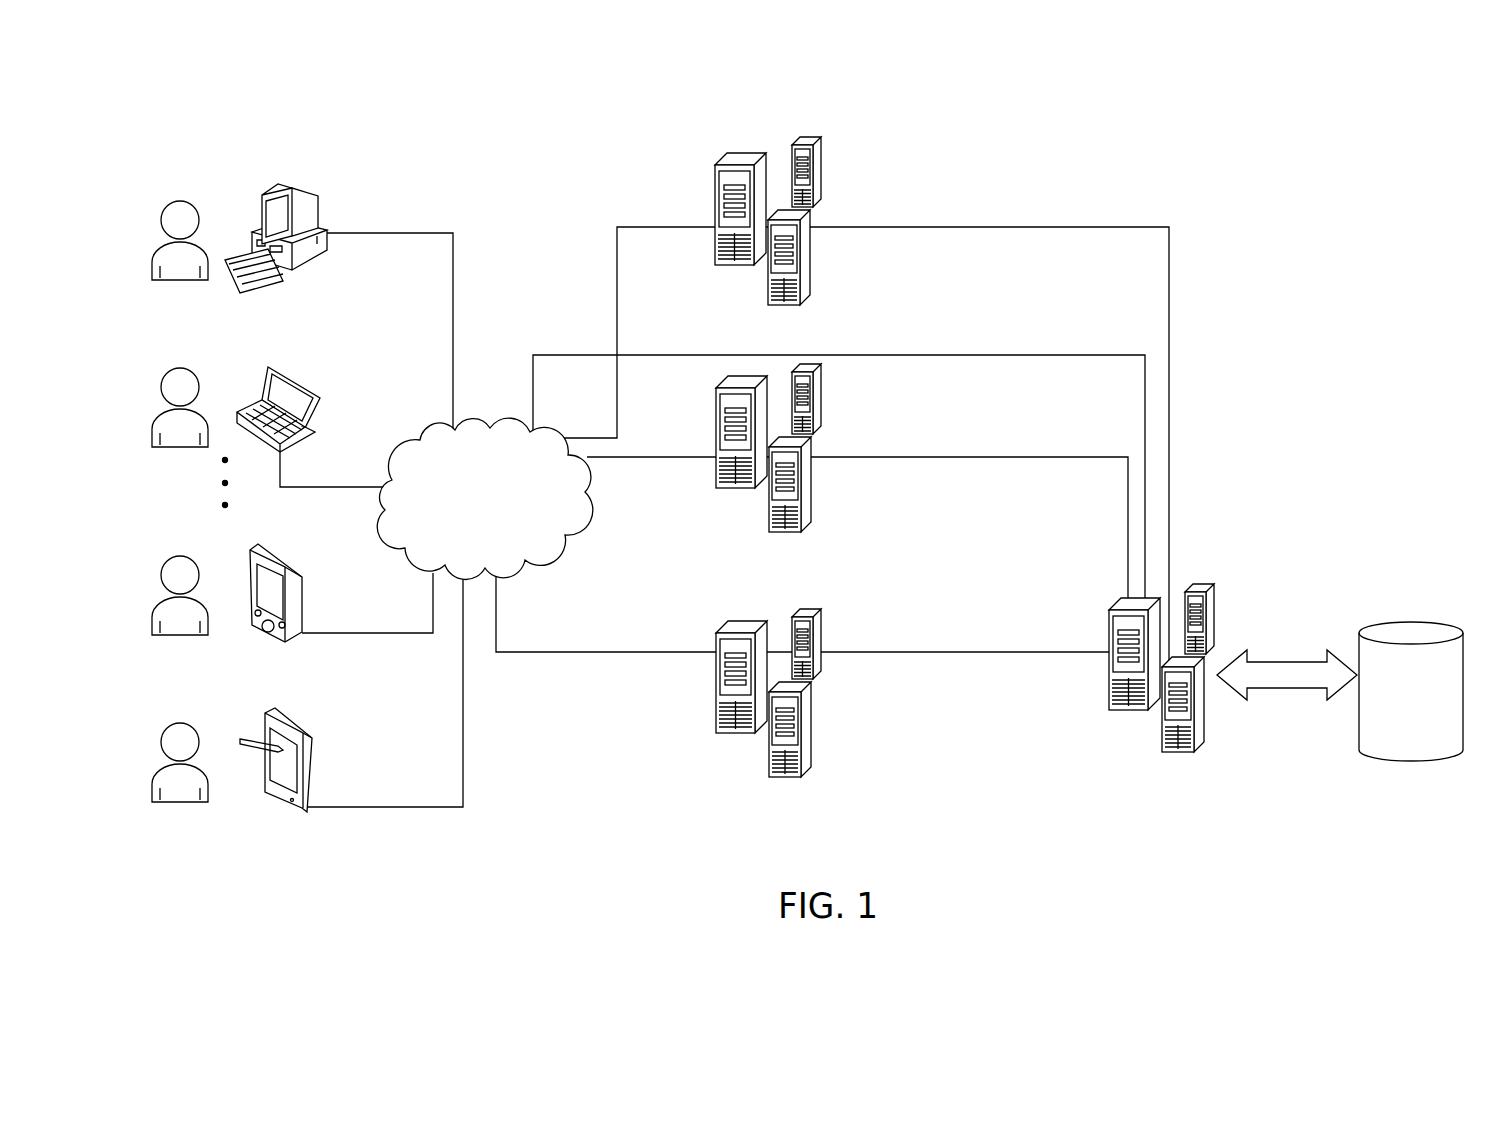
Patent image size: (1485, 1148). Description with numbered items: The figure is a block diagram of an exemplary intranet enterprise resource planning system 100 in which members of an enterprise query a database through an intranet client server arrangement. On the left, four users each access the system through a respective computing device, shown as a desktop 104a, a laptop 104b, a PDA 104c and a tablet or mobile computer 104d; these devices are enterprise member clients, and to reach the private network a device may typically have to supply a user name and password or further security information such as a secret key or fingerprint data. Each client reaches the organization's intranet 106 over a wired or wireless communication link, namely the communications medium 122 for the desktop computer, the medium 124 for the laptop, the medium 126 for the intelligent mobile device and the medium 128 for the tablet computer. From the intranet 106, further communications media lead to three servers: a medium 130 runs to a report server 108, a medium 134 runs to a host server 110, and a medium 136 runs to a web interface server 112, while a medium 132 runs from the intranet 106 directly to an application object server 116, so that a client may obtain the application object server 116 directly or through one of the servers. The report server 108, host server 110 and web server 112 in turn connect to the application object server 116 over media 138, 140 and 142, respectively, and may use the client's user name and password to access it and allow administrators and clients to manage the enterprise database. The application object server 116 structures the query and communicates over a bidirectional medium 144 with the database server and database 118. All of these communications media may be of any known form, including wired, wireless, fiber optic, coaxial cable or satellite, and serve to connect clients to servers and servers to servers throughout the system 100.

The intranet enterprise resource planning system 100 is at (1264, 160).
The desktop 104a is at (291, 190).
The laptop 104b is at (287, 377).
The PDA 104c is at (277, 556).
The tablet or mobile computer 104d is at (290, 722).
The intranet 106 is at (490, 428).
The report server 108 is at (742, 160).
The host server 110 is at (716, 413).
The web interface server 112 is at (740, 622).
The application object server 116 is at (1200, 590).
The database server and database 118 is at (1415, 621).
The communication link for desktop computer 122 is at (392, 232).
The communication link for laptop 124 is at (342, 486).
The communication link for intelligent mobile device 126 is at (344, 632).
The communication link for tablet computer 128 is at (344, 806).
The communications medium 130 is at (651, 226).
The communications medium 132 is at (1005, 354).
The communications medium 134 is at (641, 458).
The communications medium 136 is at (623, 654).
The communications medium 138 is at (1035, 226).
The communications medium 140 is at (983, 456).
The communications medium 142 is at (954, 651).
The communications medium 144 is at (1288, 660).